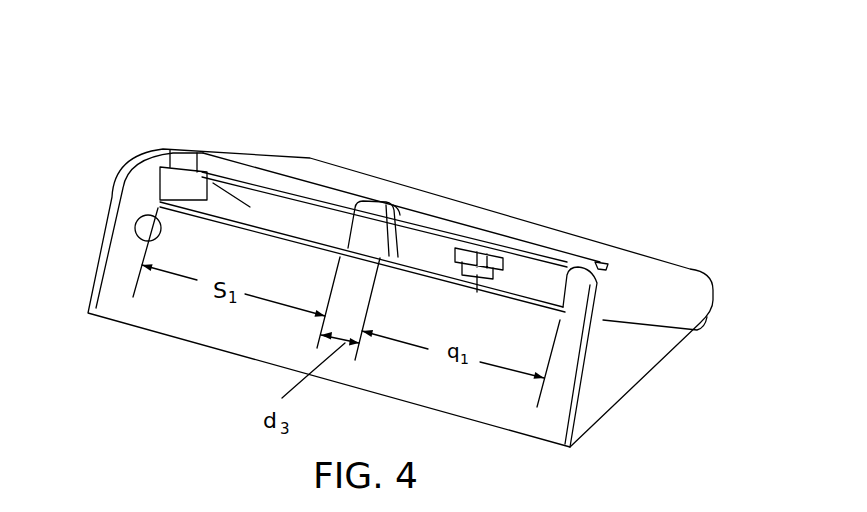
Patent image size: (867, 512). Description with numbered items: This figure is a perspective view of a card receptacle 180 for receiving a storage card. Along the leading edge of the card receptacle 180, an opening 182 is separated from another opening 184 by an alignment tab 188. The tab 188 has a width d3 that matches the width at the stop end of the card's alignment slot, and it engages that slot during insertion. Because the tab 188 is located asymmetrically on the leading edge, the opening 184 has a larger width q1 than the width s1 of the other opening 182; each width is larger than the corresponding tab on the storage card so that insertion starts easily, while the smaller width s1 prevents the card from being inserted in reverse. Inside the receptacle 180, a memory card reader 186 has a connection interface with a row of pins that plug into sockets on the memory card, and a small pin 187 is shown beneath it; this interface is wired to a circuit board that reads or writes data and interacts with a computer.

The card receptacle 180 is at (138, 97).
The opening 182 is at (250, 207).
The opening 184 is at (540, 280).
The memory card reader 186 is at (467, 250).
The pin 187 is at (479, 288).
The alignment tab 188 is at (375, 198).